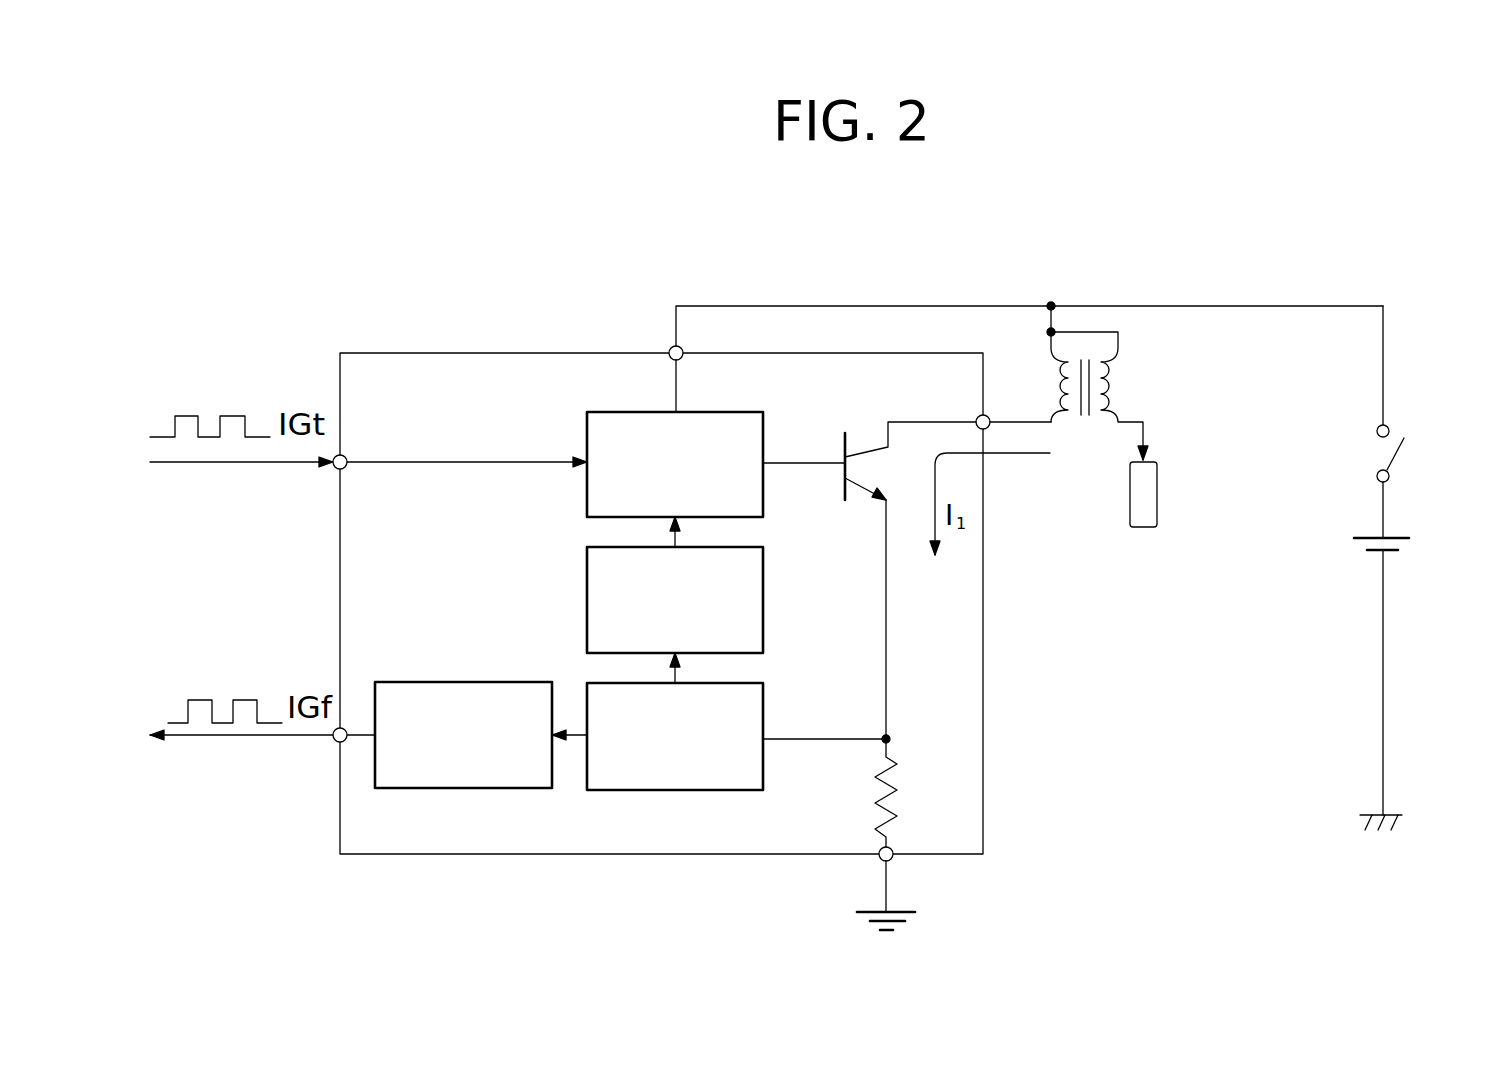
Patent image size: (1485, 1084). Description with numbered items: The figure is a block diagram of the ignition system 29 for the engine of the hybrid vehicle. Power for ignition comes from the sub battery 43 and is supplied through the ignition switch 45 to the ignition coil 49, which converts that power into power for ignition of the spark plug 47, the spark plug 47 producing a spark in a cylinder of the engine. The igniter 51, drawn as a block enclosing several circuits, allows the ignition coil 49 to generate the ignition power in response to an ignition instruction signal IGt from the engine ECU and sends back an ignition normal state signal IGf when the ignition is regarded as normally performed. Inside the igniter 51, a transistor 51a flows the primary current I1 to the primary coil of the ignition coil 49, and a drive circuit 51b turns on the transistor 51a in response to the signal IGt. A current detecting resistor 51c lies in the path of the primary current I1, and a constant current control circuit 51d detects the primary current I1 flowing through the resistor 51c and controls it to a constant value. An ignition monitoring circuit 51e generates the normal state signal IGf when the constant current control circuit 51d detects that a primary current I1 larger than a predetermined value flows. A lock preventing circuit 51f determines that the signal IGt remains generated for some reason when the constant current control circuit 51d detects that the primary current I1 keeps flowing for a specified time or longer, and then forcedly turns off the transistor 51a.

The ignition system 29 is at (1092, 292).
The sub battery 43 is at (1398, 534).
The ignition switch 45 is at (1405, 449).
The spark plug 47 is at (1157, 475).
The ignition coil 49 is at (1122, 366).
The igniter 51 is at (500, 353).
The transistor 51a is at (872, 448).
The drive circuit 51b is at (733, 412).
The resistor 51c is at (875, 796).
The constant current control circuit 51d is at (763, 708).
The ignition monitoring circuit 51e is at (500, 682).
The lock preventing circuit 51f is at (763, 578).